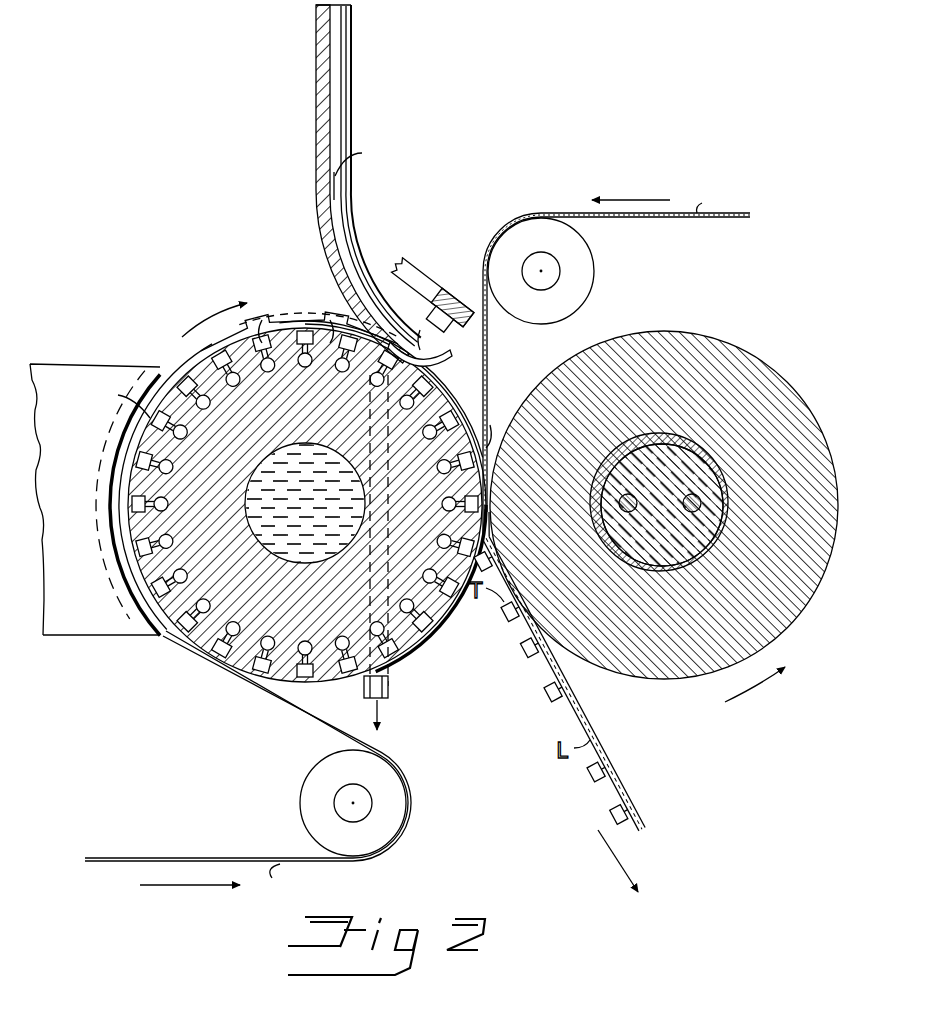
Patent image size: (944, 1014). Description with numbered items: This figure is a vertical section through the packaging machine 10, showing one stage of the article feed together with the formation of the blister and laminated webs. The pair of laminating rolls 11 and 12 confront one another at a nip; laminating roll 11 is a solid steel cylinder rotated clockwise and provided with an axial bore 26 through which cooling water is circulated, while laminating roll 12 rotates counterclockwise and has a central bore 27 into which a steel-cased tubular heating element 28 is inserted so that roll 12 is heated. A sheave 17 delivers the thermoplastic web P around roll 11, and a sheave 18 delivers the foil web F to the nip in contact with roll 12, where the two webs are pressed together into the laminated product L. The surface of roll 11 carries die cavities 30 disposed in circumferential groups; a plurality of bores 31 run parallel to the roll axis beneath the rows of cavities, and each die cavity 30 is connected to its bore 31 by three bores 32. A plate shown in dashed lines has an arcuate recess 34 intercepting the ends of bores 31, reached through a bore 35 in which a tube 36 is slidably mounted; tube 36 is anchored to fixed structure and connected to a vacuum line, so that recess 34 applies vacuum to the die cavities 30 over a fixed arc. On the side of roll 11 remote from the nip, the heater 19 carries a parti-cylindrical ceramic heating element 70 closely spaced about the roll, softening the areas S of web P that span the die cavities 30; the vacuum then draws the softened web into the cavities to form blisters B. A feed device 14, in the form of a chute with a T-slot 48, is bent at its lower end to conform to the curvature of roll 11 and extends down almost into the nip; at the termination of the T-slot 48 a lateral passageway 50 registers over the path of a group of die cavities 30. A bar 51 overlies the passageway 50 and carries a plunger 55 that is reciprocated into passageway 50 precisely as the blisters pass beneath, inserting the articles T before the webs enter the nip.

The packaging machine 10 is at (442, 182).
The laminating roll 11 is at (428, 640).
The laminating roll 12 is at (746, 350).
The feed device 14 is at (352, 131).
The sheave 17 is at (300, 784).
The sheave 18 is at (594, 272).
The heater 19 is at (85, 646).
The axial bore 26 is at (256, 508).
The central bore 27 is at (712, 472).
The heating element 28 is at (735, 518).
The die cavity 30 is at (234, 370).
The bore 31 is at (240, 650).
The bore 32 is at (150, 428).
The arcuate recess 34 is at (290, 328).
The bore 35 is at (326, 316).
The tube 36 is at (390, 692).
The T-slot 48 is at (334, 96).
The passageway 50 is at (440, 356).
The bar 51 is at (440, 306).
The plunger 55 is at (485, 343).
The heating element 70 is at (130, 612).